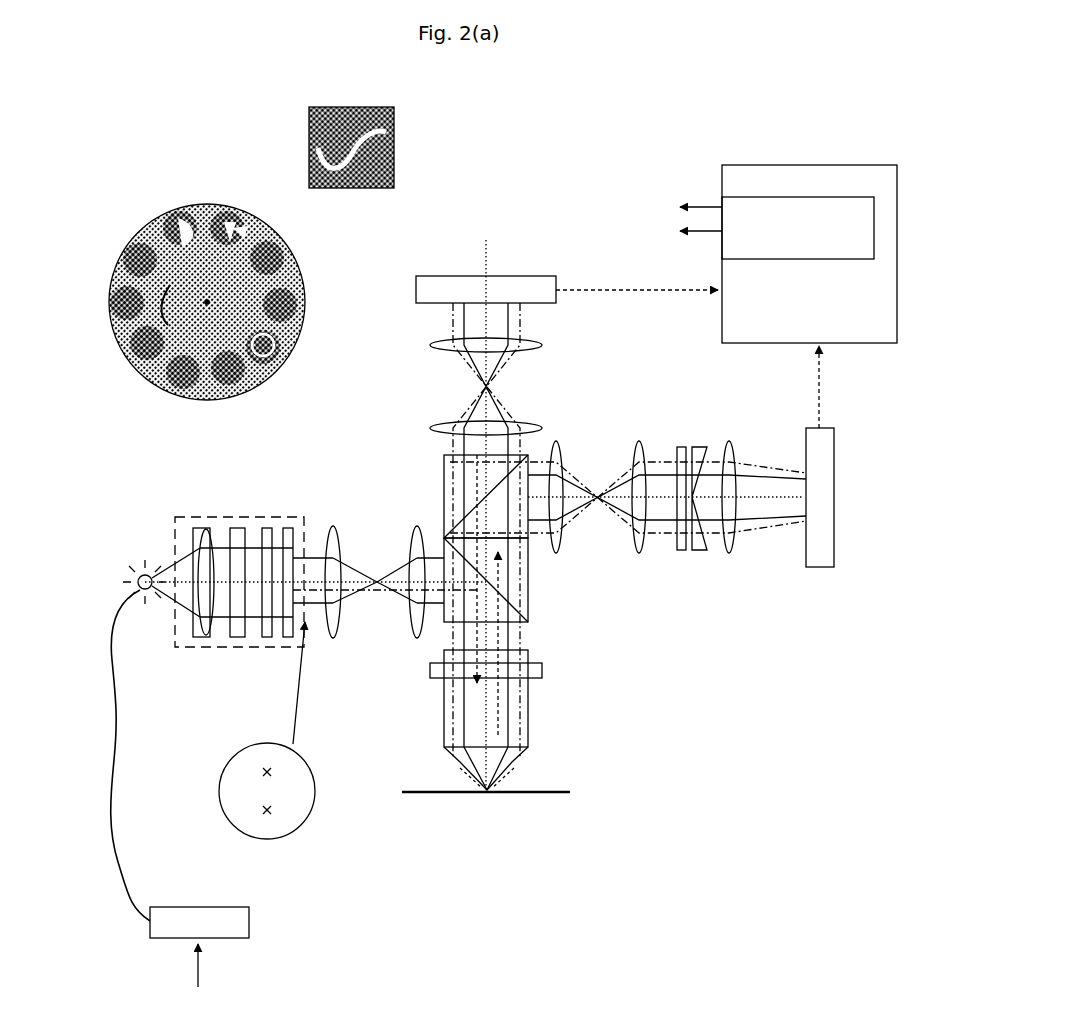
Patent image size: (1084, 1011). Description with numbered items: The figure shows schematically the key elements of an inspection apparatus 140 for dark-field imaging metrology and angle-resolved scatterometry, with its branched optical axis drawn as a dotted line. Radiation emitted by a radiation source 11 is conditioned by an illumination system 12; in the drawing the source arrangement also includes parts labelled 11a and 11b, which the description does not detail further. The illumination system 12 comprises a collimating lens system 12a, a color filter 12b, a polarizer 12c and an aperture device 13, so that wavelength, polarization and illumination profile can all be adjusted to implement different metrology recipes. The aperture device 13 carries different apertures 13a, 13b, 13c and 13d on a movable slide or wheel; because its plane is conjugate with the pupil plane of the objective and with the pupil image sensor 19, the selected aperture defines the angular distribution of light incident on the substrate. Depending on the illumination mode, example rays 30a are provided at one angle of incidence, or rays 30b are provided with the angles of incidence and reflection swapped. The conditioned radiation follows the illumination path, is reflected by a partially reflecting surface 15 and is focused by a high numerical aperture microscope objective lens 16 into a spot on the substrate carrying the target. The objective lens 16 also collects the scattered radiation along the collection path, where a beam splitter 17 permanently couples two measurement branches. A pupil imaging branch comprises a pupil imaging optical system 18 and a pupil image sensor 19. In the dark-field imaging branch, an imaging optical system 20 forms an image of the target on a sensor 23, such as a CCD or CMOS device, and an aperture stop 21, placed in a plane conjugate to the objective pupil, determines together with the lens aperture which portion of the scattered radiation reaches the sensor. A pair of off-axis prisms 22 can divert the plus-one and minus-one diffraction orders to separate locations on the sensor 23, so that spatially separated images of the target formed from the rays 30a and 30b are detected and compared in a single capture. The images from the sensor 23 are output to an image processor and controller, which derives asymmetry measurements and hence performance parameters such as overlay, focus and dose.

The inspection apparatus 140 is at (498, 126).
The aperture device 13 is at (251, 372).
The aperture 13a is at (275, 372).
The aperture 13b is at (212, 402).
The aperture 13c is at (212, 215).
The aperture image 13d is at (309, 166).
The illumination system 12 is at (232, 609).
The collimating lens system 12a is at (210, 640).
The color filter 12b is at (236, 640).
The polarizer 12c is at (266, 640).
The radiation source 11 is at (148, 600).
The radiation source 11a is at (249, 925).
The optical fiber 11b is at (110, 822).
The example rays 30a is at (316, 560).
The rays 30b is at (322, 604).
The beam splitter 17 is at (455, 523).
The partially reflecting surface 15 is at (528, 606).
The pupil image sensor 19 is at (553, 276).
The pupil imaging optical system 18 is at (618, 368).
The microscope objective lens 16 is at (523, 720).
The imaging optical system 20 is at (659, 397).
The aperture stop 21 is at (682, 552).
The off-axis prisms 22 is at (700, 552).
The sensor 23 is at (834, 440).